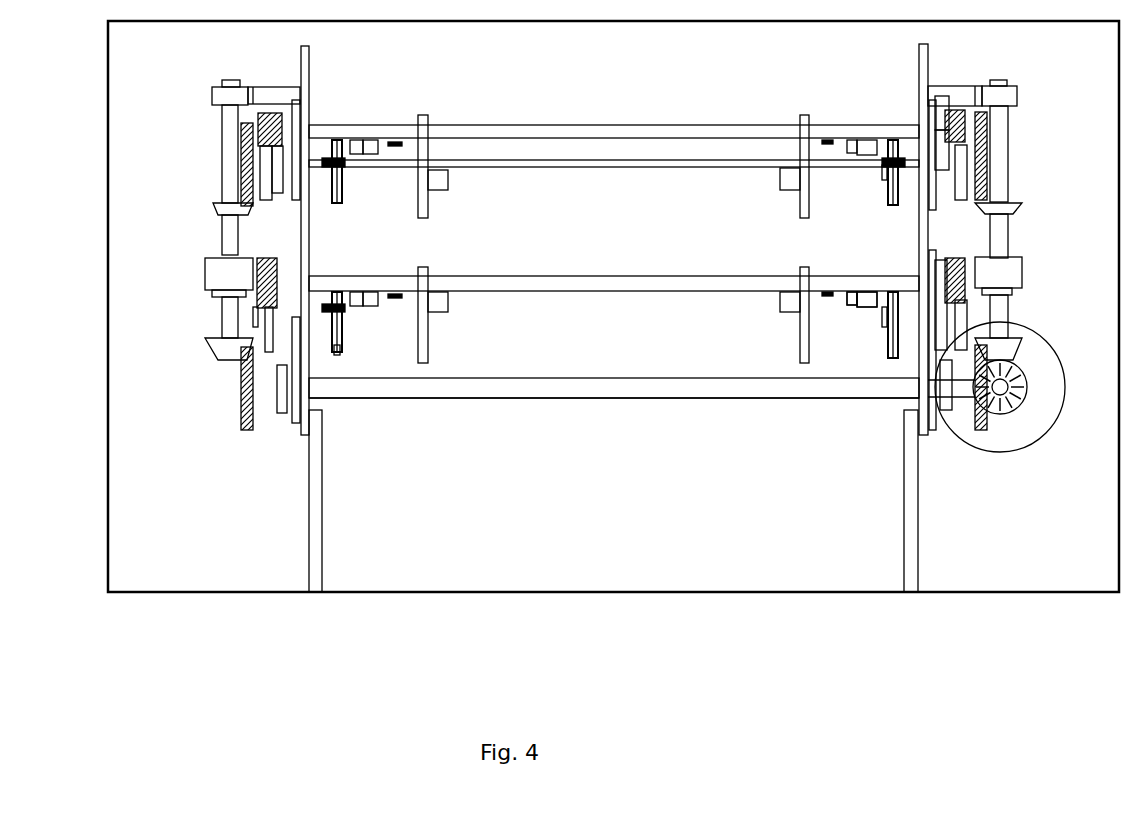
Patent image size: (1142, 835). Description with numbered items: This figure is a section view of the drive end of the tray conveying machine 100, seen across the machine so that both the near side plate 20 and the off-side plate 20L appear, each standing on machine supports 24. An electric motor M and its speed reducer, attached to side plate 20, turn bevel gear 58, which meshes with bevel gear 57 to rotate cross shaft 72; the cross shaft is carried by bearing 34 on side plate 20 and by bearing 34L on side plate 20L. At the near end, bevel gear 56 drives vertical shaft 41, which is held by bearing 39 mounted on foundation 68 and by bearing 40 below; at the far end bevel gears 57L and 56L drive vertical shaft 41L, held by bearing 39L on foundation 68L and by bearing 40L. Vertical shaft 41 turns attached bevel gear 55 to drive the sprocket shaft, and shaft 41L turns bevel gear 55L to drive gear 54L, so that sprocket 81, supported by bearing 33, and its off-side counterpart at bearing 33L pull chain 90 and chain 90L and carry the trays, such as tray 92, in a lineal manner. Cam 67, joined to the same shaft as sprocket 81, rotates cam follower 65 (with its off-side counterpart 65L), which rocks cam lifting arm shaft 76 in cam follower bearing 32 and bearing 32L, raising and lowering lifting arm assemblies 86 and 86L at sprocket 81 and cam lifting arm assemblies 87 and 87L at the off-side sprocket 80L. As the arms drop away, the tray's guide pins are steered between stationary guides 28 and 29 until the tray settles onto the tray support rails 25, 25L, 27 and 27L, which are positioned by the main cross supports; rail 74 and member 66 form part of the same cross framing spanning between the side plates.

The apparatus 100 is at (108, 135).
The side plate 20 is at (920, 415).
The side plate 20L is at (309, 58).
The machine supports 24 is at (313, 468).
The tray support rail 25 is at (809, 184).
The tray support rail 25L is at (438, 182).
The tray support rail 27 is at (805, 360).
The tray support rail 27L is at (444, 362).
The stationary guide 28 is at (875, 305).
The stationary guide 29 is at (850, 297).
The cam follower bearing 32 is at (932, 120).
The cam follower bearing 32L is at (290, 128).
The bearing 33 is at (937, 195).
The bearing 33L is at (300, 200).
The bearing 34 is at (934, 432).
The bearing 34L is at (283, 413).
The bearing 39 is at (1000, 90).
The bearing 39L is at (212, 100).
The bearing 40 is at (995, 275).
The bearing 40L is at (213, 262).
The vertical shaft 41 is at (1013, 255).
The vertical shaft 41L is at (230, 145).
The bevel gear 54L is at (253, 200).
The bevel gear 55 is at (1000, 210).
The bevel gear 55L is at (228, 208).
The bevel gear 56 is at (1013, 347).
The bevel gear 56L is at (228, 345).
The bevel gear 57 is at (997, 410).
The bevel gear 57L is at (243, 390).
The bevel gear 58 is at (1027, 395).
The cam follower 65 is at (980, 135).
The cam follower 65L is at (238, 300).
The lower rail 66 is at (920, 375).
The cam 67 is at (978, 160).
The foundation 68 is at (945, 92).
The foundation 68L is at (278, 90).
The cross shaft 72 is at (645, 392).
The middle cross member 74 is at (748, 287).
The cam lifting arm shaft 76 is at (748, 132).
The sprocket 80L is at (341, 330).
The sprocket 81 is at (888, 178).
The lifting arm assembly 86 is at (800, 193).
The lifting arm assembly 86L is at (430, 205).
The cam lifting arm assembly 87 is at (780, 310).
The cam lifting arm assembly 87L is at (430, 330).
The chain 90 is at (893, 200).
The chain 90L is at (338, 352).
The tray 92 is at (778, 160).